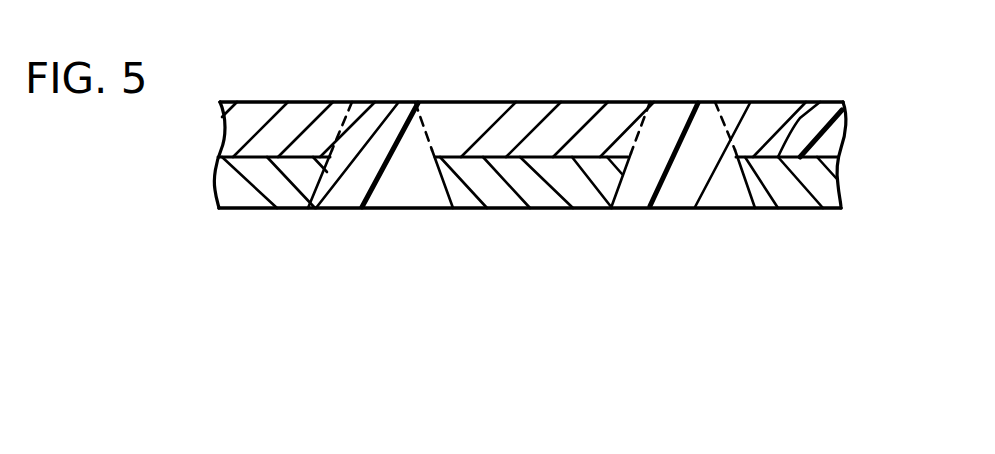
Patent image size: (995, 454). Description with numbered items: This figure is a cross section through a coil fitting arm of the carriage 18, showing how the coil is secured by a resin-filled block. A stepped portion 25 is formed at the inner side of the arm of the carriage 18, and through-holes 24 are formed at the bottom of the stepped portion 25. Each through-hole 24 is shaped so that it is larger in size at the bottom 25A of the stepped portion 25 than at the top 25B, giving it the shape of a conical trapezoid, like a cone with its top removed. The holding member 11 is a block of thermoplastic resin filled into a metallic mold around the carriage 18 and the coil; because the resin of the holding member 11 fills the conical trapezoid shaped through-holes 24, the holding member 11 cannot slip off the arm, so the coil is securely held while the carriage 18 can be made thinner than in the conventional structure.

The holding member 11 is at (525, 110).
The carriage 18 is at (731, 88).
The through-hole 24 is at (331, 155).
The stepped portion 25 is at (544, 155).
The bottom of stepped portion 25A is at (765, 209).
The top of stepped portion 25B is at (820, 103).